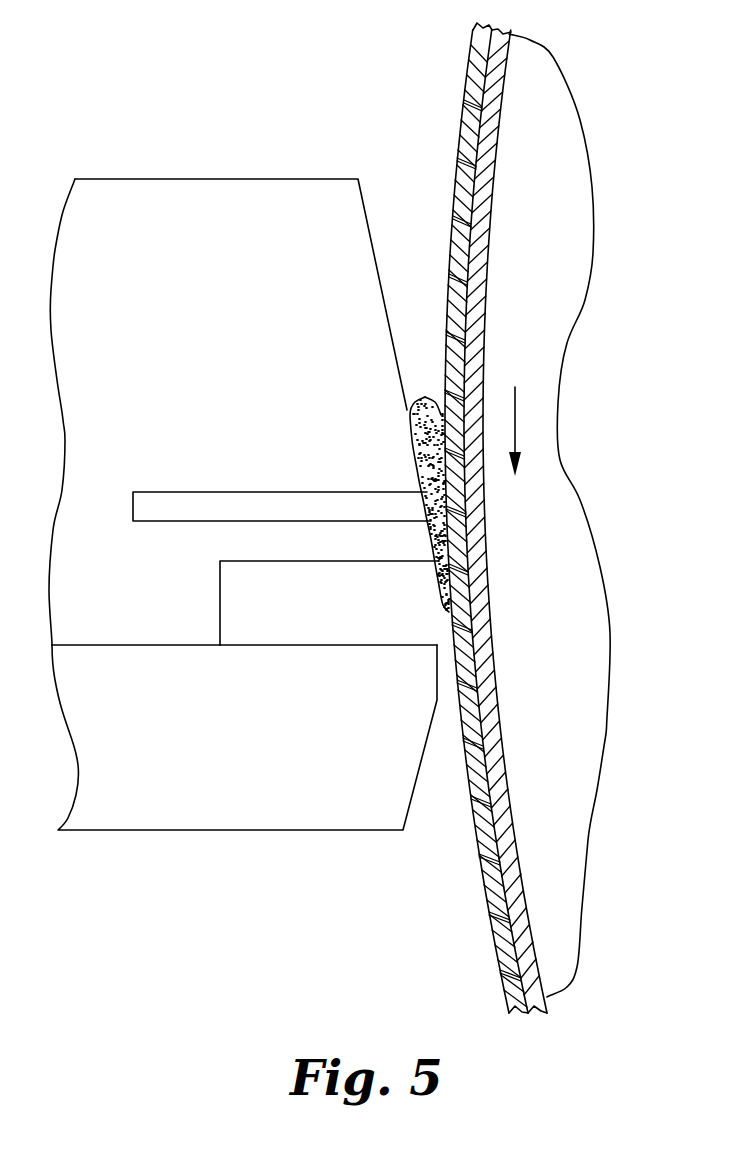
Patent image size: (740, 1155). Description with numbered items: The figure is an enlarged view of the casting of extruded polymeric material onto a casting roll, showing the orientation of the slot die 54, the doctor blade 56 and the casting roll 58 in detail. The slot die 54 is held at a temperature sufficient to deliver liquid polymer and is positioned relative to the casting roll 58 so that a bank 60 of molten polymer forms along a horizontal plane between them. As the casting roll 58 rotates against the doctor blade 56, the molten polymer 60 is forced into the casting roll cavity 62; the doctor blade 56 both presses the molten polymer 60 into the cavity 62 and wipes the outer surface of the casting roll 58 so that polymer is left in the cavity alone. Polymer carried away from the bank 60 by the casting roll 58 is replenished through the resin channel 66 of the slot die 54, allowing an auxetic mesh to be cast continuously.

The slot die 54 is at (167, 156).
The doctor blade 56 is at (353, 618).
The casting roll 58 is at (549, 263).
The bank of molten polymer 60 is at (420, 430).
The casting roll cavity 62 is at (466, 92).
The resin channel 66 is at (193, 505).